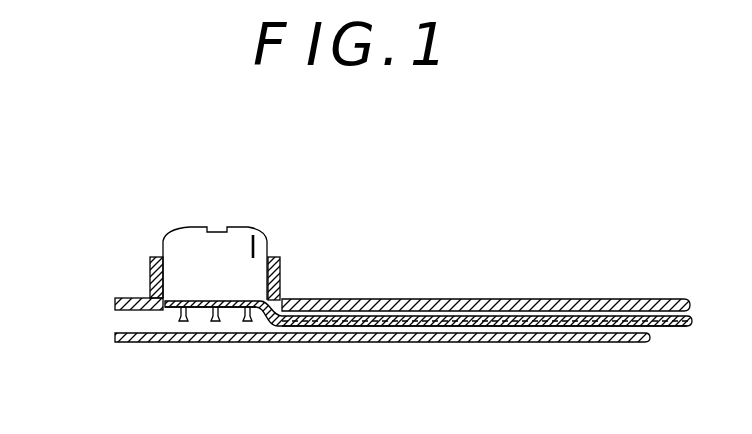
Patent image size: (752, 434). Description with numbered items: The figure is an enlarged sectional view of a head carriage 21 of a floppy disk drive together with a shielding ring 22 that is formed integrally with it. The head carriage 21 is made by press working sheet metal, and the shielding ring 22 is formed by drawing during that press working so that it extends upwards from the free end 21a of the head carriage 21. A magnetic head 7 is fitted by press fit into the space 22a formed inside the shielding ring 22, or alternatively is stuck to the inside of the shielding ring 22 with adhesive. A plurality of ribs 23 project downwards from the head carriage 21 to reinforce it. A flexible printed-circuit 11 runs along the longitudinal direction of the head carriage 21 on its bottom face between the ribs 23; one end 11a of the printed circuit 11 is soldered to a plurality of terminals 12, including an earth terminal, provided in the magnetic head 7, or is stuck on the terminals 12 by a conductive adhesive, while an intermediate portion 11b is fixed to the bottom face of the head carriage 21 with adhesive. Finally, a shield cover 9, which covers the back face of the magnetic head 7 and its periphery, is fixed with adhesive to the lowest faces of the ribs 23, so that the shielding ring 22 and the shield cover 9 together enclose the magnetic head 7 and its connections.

The magnetic head 7 is at (197, 243).
The space 22a is at (172, 259).
The shielding ring 22 is at (280, 265).
The free end 21a is at (123, 298).
The head carriage 21 is at (570, 305).
The flexible printed-circuit 11 is at (458, 315).
The one end of the printed circuit 11a is at (214, 322).
The intermediate portion 11b is at (568, 327).
The terminals 12 is at (183, 316).
The shield cover 9 is at (411, 338).
The ribs 23 is at (151, 331).